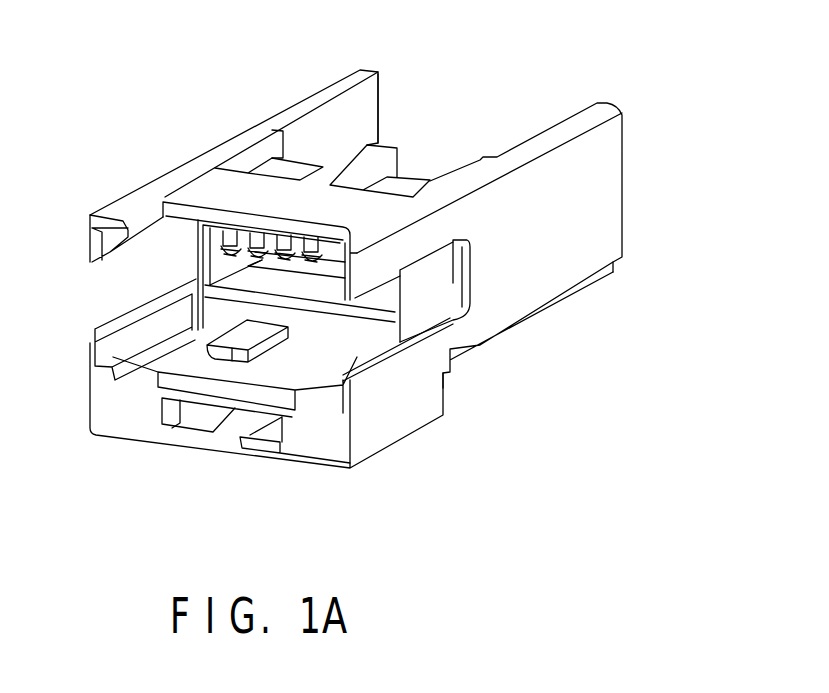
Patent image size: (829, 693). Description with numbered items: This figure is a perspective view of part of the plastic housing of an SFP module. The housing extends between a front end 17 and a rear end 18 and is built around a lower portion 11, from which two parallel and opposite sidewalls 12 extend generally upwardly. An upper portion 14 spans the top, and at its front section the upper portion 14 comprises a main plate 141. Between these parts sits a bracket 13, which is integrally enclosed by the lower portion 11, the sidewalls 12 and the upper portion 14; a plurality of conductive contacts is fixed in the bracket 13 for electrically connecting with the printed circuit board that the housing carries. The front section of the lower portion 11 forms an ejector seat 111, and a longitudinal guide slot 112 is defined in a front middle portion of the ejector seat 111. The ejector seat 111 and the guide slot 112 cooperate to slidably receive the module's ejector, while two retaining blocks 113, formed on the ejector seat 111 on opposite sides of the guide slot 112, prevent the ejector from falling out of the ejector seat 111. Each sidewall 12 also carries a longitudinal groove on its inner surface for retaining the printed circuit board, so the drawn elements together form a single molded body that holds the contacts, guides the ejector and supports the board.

The lower portion 11 is at (385, 412).
The sidewalls 12 is at (334, 120).
The bracket 13 is at (228, 305).
The upper portion 14 is at (350, 163).
The front end 17 is at (107, 397).
The rear end 18 is at (379, 100).
The ejector seat 111 is at (207, 418).
The guide slot 112 is at (233, 437).
The retaining blocks 113 is at (175, 408).
The main plate 141 is at (190, 187).